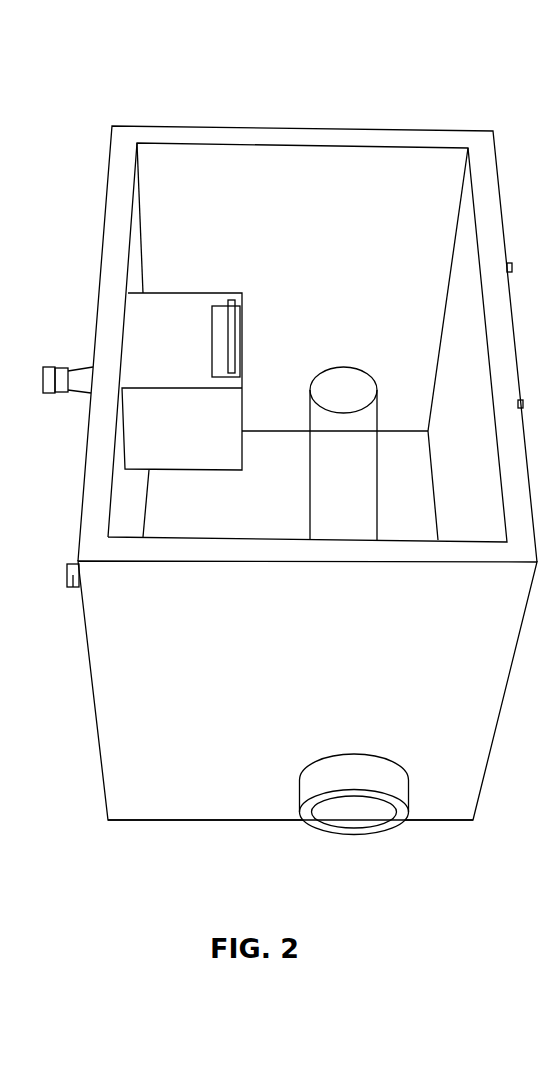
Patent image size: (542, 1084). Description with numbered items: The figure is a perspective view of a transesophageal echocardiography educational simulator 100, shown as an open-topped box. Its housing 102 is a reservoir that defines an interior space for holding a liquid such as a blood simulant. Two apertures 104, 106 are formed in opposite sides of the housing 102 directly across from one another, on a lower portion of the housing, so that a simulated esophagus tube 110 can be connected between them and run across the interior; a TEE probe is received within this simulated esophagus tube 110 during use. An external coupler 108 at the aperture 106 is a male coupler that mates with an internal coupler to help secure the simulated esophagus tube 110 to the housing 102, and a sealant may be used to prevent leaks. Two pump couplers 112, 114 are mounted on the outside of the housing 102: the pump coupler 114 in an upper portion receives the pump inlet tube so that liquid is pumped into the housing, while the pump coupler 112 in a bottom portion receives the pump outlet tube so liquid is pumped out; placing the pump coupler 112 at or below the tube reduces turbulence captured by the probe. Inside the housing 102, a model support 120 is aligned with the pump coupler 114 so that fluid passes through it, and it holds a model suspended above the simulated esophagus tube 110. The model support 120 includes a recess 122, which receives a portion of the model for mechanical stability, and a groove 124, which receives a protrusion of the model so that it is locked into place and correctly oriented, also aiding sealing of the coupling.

The TEE educational simulator 100 is at (92, 72).
The housing 102 is at (313, 137).
The aperture 104 is at (345, 392).
The aperture 106 is at (358, 808).
The external coupler 108 is at (364, 835).
The simulated esophagus tube 110 is at (308, 527).
The pump coupler 112 is at (72, 587).
The pump coupler 114 is at (45, 393).
The model support 120 is at (185, 292).
The recess 122 is at (222, 315).
The groove 124 is at (246, 349).